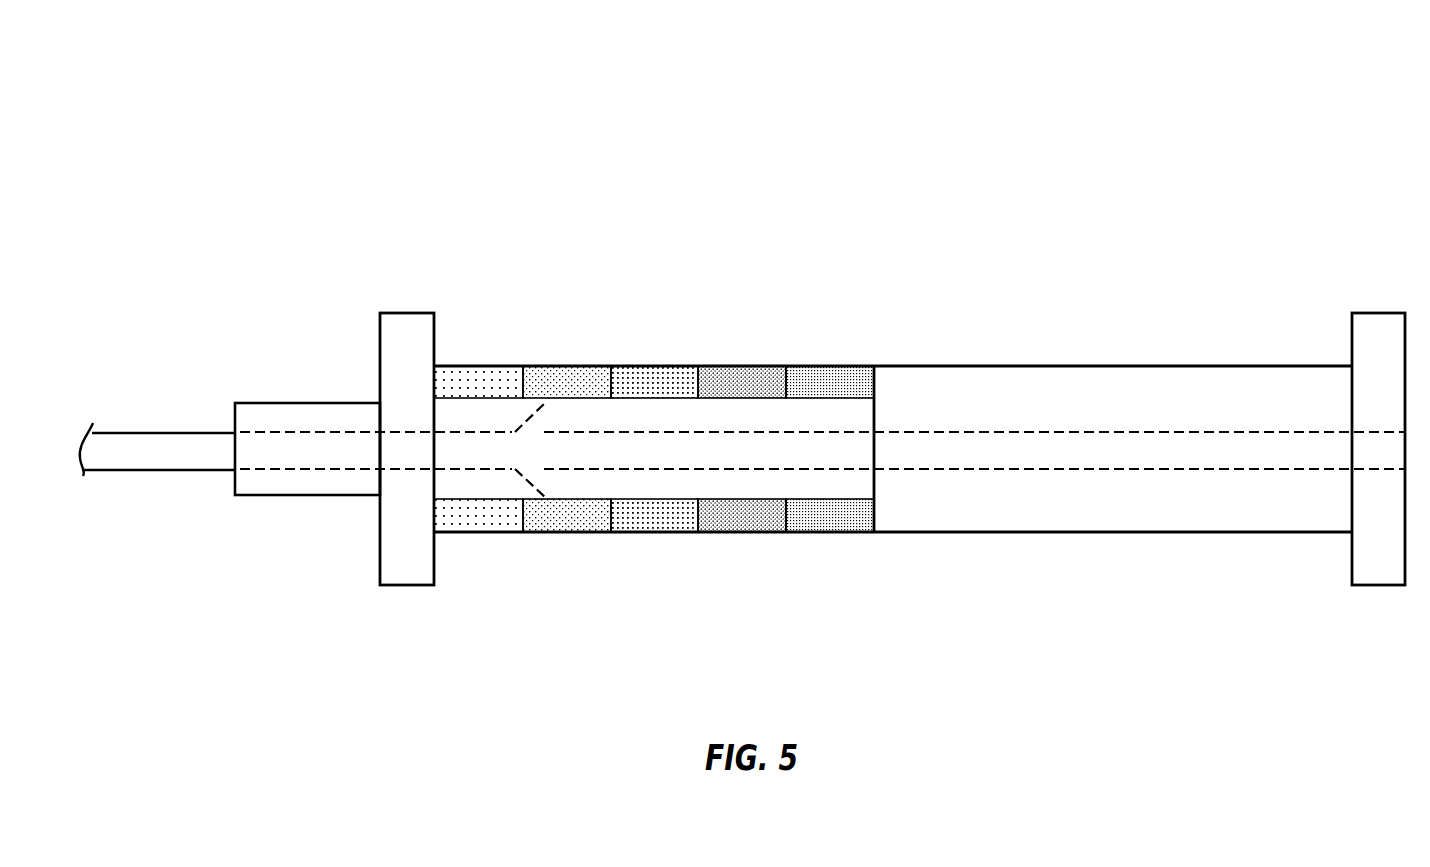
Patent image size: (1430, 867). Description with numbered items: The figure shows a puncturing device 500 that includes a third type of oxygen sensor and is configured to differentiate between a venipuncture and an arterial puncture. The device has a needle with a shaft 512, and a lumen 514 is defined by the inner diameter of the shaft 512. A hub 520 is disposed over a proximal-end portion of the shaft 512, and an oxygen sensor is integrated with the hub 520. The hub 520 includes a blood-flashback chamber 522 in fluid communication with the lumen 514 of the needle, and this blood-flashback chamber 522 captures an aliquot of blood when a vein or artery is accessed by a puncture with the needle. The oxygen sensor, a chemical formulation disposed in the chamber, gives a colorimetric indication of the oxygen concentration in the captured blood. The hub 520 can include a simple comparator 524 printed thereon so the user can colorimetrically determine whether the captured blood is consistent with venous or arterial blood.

The puncturing device 500 is at (717, 150).
The shaft 512 is at (133, 437).
The lumen 514 is at (236, 450).
The hub 520 is at (1077, 591).
The blood-flashback chamber 522 is at (650, 424).
The simple comparator 524 is at (832, 366).